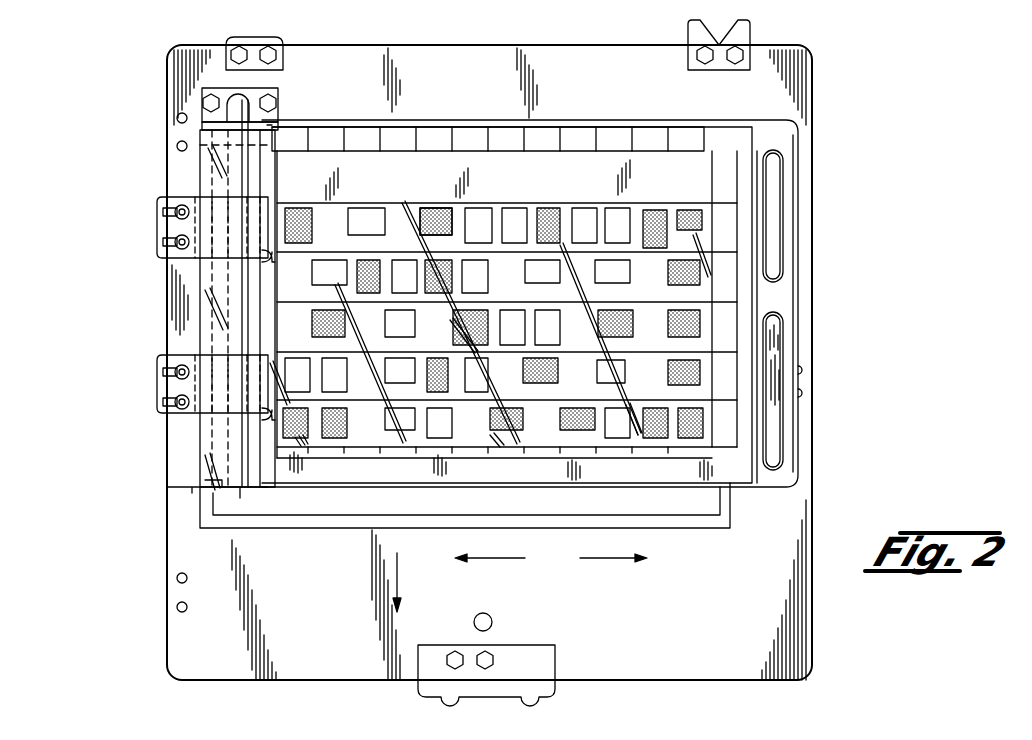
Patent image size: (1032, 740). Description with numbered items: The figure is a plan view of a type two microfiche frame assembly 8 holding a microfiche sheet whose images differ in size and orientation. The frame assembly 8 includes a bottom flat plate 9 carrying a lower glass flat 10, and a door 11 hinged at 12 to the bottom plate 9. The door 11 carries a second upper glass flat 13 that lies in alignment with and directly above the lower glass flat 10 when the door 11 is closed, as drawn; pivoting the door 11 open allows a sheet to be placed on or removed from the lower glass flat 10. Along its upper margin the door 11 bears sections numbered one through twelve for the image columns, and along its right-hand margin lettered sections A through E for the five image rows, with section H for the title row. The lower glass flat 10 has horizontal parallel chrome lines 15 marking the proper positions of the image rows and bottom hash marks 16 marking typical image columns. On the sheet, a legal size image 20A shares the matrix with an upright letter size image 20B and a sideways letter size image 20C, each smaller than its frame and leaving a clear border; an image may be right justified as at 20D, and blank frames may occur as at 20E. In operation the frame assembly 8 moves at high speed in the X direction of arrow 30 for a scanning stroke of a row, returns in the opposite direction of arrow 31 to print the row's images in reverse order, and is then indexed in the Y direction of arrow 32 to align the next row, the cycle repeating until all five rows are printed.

The frame assembly 8 is at (160, 136).
The bottom flat plate 9 is at (704, 640).
The lower glass flat 10 is at (342, 505).
The door 11 is at (752, 470).
The hinge 12 is at (235, 452).
The upper glass flat 13 is at (575, 175).
The chrome lines 15 is at (585, 352).
The bottom hash marks 16 is at (634, 452).
The microfiche image of a legal size document 20A is at (655, 215).
The microfiche image of an upright letter size document 20B is at (545, 210).
The microfiche image of a sideways letter size document 20C is at (510, 446).
The right justified microfiche image 20D is at (692, 438).
The blank microfiche image frame 20E is at (393, 222).
The arrow indicating X direction scanning stroke 30 is at (615, 558).
The arrow indicating opposite X direction printing stroke 31 is at (504, 558).
The arrow indicating Y direction indexing 32 is at (397, 578).